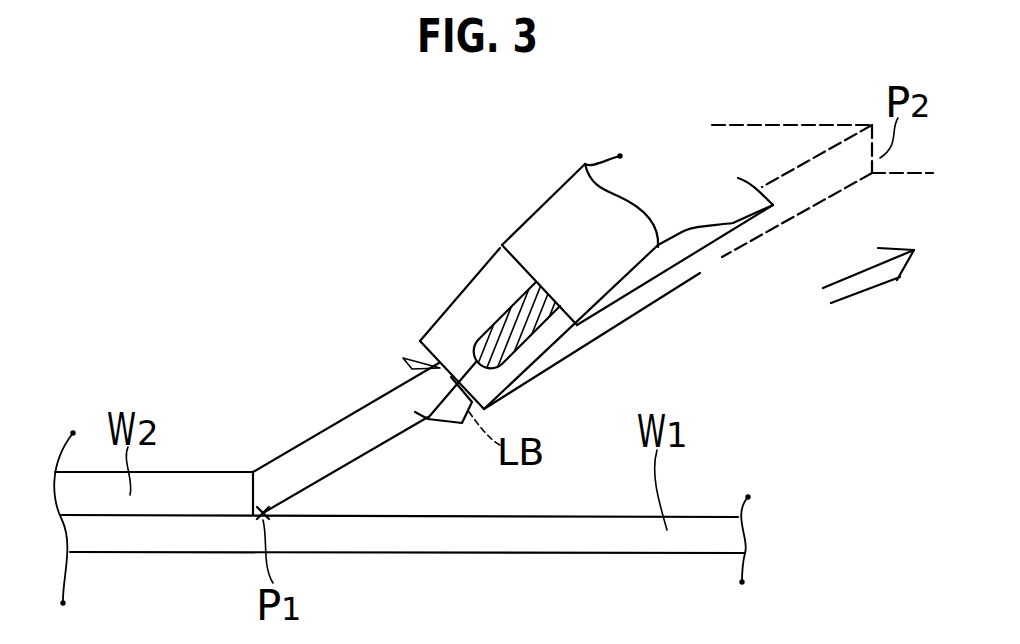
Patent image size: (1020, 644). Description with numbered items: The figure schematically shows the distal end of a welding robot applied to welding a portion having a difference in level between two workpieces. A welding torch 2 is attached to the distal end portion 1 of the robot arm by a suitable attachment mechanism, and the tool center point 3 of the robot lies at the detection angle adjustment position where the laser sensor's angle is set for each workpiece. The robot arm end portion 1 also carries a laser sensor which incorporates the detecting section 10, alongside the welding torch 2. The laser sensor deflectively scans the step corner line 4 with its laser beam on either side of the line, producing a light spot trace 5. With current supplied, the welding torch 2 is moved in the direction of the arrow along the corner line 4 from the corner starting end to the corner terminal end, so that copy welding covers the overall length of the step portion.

The distal end portion of the robot arm 1 is at (679, 269).
The welding torch 2 is at (480, 300).
The tool center point 3 is at (428, 368).
The step corner line 4 is at (327, 477).
The light spot trace 5 is at (405, 368).
The detecting section 10 is at (567, 354).